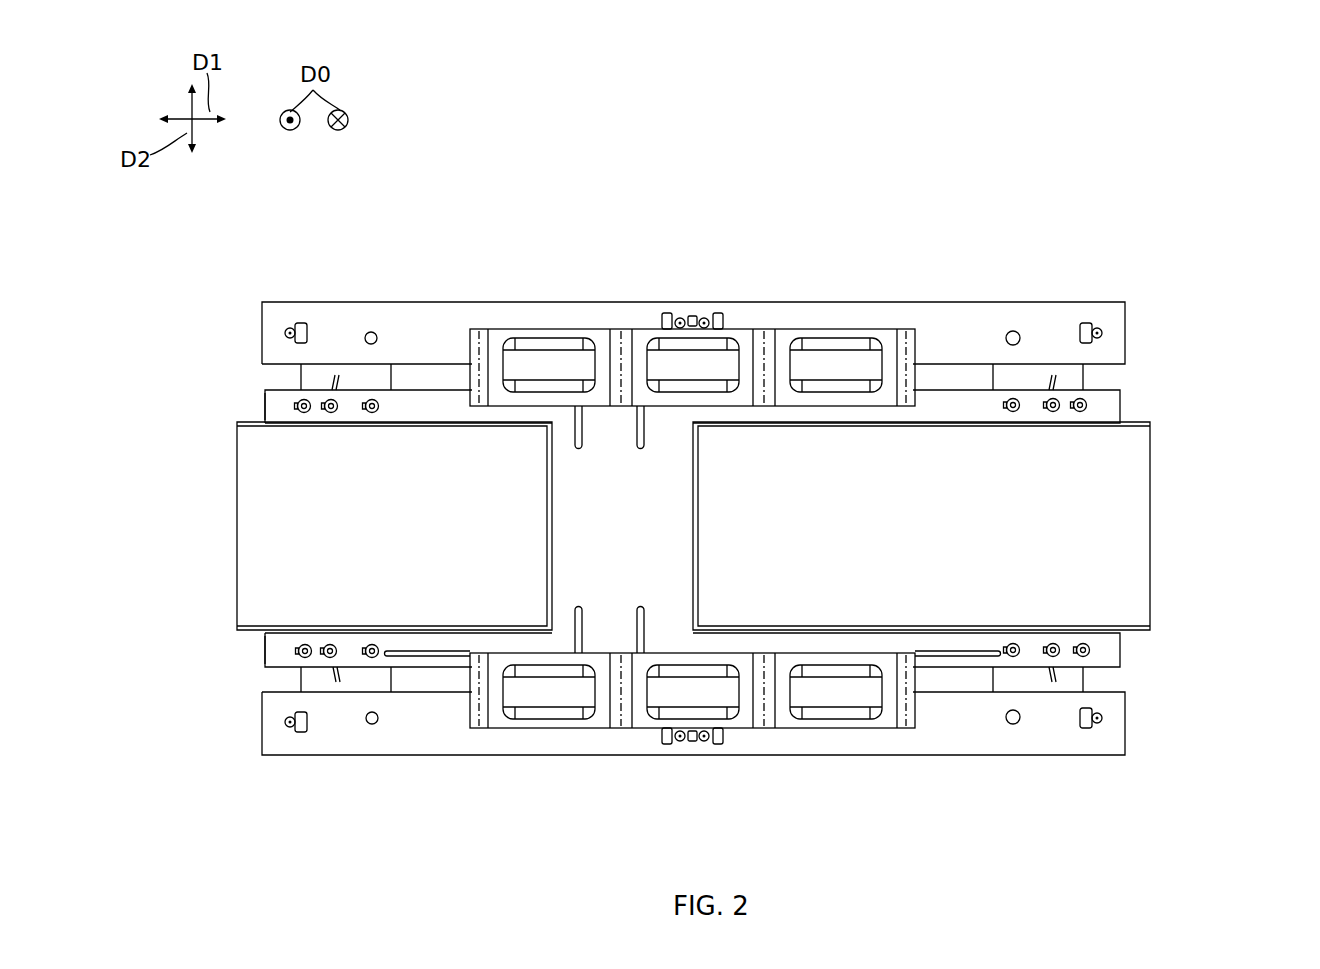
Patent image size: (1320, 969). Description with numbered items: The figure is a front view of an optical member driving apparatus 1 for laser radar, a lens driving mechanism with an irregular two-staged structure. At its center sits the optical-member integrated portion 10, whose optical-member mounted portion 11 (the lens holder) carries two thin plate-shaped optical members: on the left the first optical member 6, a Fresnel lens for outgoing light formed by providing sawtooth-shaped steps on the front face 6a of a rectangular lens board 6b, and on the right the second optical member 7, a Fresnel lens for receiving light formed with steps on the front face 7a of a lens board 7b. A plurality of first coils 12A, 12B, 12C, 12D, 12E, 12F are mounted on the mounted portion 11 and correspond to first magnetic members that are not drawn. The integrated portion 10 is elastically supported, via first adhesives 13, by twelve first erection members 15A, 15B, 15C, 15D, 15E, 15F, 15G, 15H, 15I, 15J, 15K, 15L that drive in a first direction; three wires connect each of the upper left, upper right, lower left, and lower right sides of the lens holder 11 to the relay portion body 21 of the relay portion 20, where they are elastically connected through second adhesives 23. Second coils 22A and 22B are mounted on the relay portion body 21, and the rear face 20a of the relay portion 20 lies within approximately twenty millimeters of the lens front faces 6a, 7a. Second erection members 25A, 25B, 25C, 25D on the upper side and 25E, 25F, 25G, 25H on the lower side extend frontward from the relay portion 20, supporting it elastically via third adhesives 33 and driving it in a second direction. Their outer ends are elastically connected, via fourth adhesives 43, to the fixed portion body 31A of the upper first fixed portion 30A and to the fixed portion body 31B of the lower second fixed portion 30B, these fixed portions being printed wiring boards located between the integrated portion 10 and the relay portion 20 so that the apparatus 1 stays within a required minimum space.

The optical member driving apparatus for laser radar 1 is at (1250, 245).
The first optical member 6 is at (280, 520).
The front face of first Fresnel lens 6a is at (262, 493).
The lens board of first Fresnel lens 6b is at (262, 536).
The second optical member 7 is at (1105, 522).
The front face of second Fresnel lens 7a is at (1123, 497).
The lens board of second Fresnel lens 7b is at (1123, 560).
The optical-member integrated portion 10 is at (1122, 395).
The optical-member mounted portion 11 is at (1125, 662).
The first coil 12A is at (586, 338).
The first coil 12B is at (738, 338).
The first coil 12C is at (872, 338).
The first coil 12D is at (590, 719).
The first coil 12E is at (735, 719).
The first coil 12F is at (878, 719).
The first adhesive 13 is at (265, 416).
The first erection member 15A is at (297, 406).
The first erection member 15B is at (328, 378).
The first erection member 15C is at (372, 413).
The first erection member 15D is at (1015, 412).
The first erection member 15E is at (1056, 378).
The first erection member 15F is at (1087, 407).
The first erection member 15G is at (299, 654).
The first erection member 15H is at (327, 673).
The first erection member 15I is at (372, 644).
The first erection member 15J is at (1015, 646).
The first erection member 15K is at (1053, 674).
The first erection member 15L is at (1090, 650).
The relay portion 20 is at (299, 388).
The rear face of relay portion 20a is at (940, 325).
The relay portion body 21 is at (315, 677).
The second coil 22A is at (690, 320).
The second coil 22B is at (690, 744).
The second adhesive 23 is at (333, 374).
The second erection member 25A is at (287, 328).
The second erection member 25B is at (677, 318).
The second erection member 25C is at (705, 318).
The second erection member 25D is at (1097, 328).
The second erection member 25E is at (287, 733).
The second erection member 25F is at (680, 742).
The second erection member 25G is at (705, 743).
The second erection member 25H is at (1098, 735).
The first fixed portion 30A is at (350, 303).
The second fixed portion 30B is at (378, 756).
The fixed portion body 31A is at (1003, 315).
The fixed portion body 31B is at (1000, 740).
The third adhesive 33 is at (373, 332).
The fourth adhesive 43 is at (284, 333).